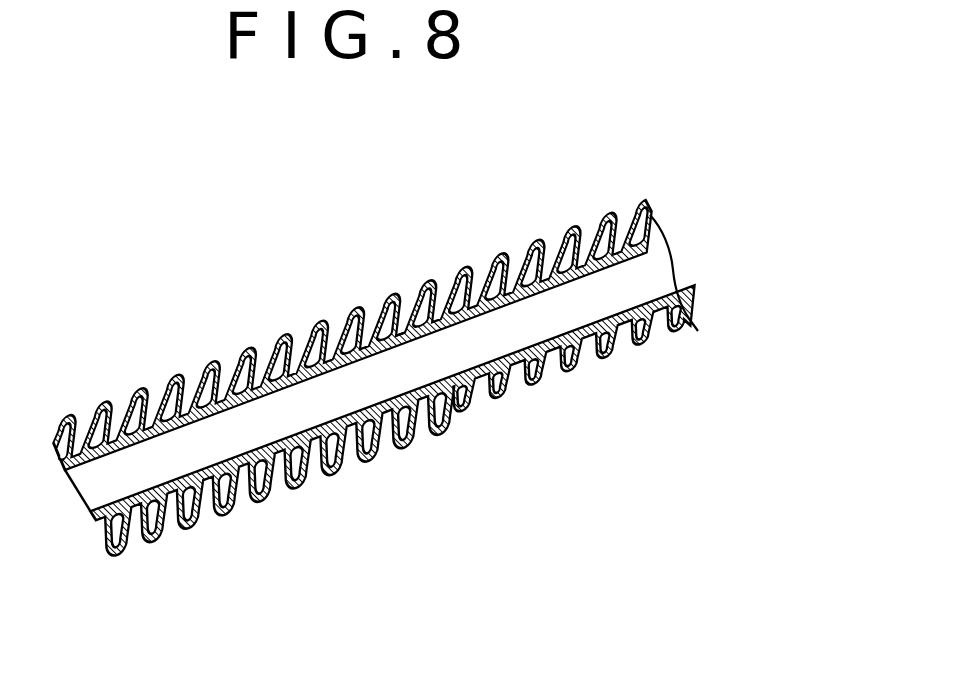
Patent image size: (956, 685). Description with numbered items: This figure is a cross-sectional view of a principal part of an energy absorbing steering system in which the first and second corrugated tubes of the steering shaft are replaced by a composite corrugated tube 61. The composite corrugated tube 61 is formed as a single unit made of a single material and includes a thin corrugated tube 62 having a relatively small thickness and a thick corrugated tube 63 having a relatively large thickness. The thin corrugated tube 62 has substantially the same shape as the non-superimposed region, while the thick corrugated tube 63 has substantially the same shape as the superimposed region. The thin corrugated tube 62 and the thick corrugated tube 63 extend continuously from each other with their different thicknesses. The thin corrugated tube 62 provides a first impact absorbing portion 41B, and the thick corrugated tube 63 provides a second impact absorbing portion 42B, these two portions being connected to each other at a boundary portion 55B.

The composite corrugated tube 61 is at (380, 360).
The thin corrugated tube 62 is at (461, 287).
The thick corrugated tube 63 is at (379, 299).
The boundary portion 55B is at (410, 307).
The first impact absorbing portion 41B is at (503, 395).
The second impact absorbing portion 42B is at (440, 432).